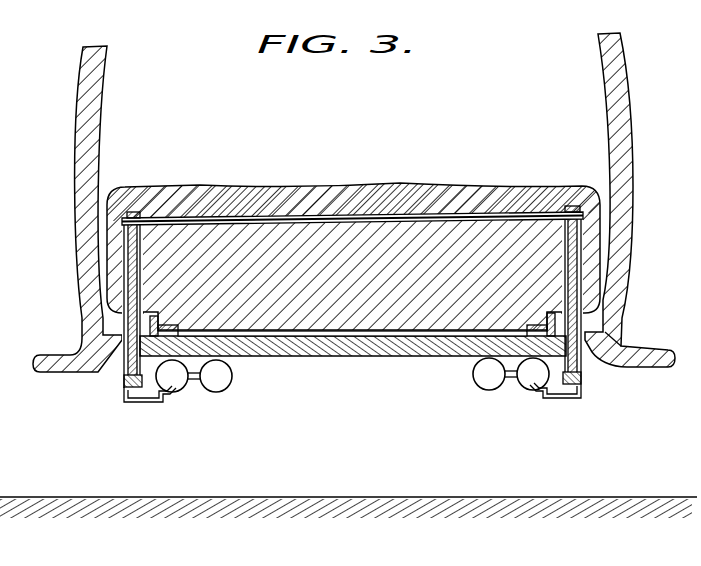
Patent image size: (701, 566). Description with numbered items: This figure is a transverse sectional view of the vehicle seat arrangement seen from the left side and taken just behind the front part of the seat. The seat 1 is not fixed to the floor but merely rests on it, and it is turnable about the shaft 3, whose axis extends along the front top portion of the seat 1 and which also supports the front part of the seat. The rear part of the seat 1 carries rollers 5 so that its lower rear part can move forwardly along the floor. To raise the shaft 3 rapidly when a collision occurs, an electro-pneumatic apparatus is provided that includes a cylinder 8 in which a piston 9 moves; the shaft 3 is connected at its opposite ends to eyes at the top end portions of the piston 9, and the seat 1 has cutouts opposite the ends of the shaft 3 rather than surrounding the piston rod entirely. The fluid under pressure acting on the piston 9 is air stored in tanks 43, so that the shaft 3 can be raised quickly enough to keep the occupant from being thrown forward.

The seat 1 is at (217, 238).
The shaft 3 is at (336, 218).
The rollers 5 is at (556, 316).
The cylinder 8 is at (127, 333).
The piston 9 is at (124, 387).
The tanks 43 is at (178, 384).